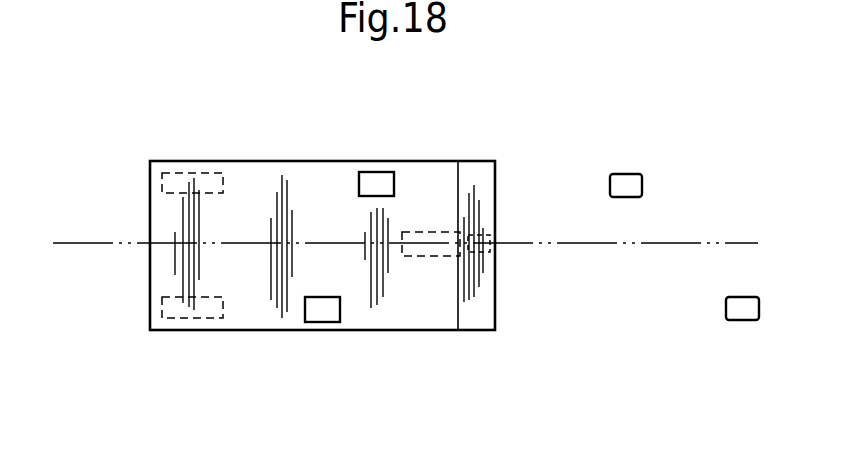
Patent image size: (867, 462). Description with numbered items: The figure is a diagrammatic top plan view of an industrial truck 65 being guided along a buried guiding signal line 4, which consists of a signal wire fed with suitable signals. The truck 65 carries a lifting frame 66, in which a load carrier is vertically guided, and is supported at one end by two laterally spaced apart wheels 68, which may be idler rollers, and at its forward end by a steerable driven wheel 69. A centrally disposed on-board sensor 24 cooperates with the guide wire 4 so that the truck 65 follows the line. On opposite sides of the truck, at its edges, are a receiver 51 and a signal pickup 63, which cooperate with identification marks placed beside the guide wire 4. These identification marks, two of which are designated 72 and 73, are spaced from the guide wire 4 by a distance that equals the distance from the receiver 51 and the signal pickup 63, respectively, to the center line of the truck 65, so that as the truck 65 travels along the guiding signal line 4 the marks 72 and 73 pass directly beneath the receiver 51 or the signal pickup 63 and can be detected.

The guiding signal line 4 is at (77, 246).
The sensor 24 is at (492, 235).
The receiver 51 is at (318, 312).
The signal pickup 63 is at (372, 185).
The industrial truck 65 is at (256, 190).
The lifting frame 66 is at (471, 177).
The wheels 68 is at (185, 310).
The steerable driven wheel 69 is at (423, 247).
The identification mark 72 is at (742, 305).
The identification mark 73 is at (625, 180).